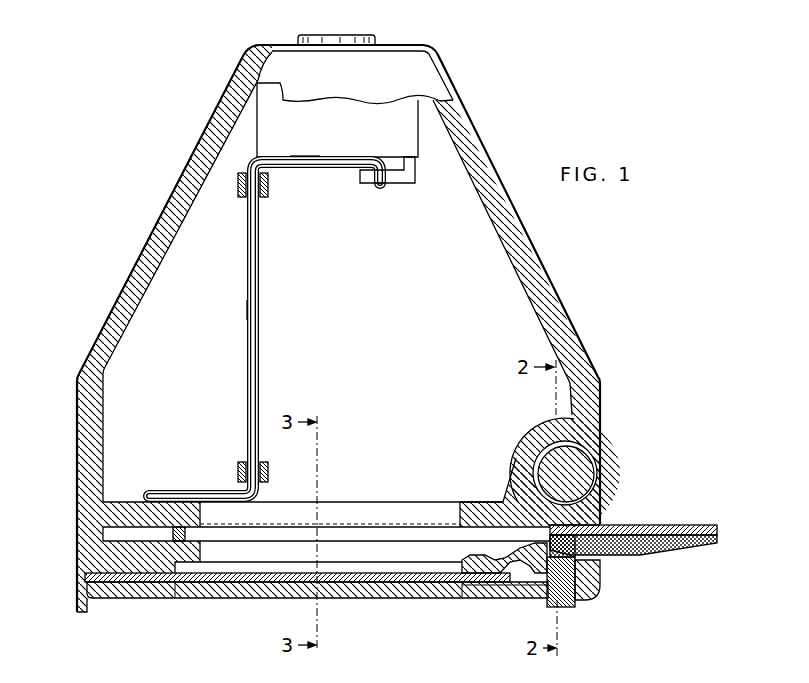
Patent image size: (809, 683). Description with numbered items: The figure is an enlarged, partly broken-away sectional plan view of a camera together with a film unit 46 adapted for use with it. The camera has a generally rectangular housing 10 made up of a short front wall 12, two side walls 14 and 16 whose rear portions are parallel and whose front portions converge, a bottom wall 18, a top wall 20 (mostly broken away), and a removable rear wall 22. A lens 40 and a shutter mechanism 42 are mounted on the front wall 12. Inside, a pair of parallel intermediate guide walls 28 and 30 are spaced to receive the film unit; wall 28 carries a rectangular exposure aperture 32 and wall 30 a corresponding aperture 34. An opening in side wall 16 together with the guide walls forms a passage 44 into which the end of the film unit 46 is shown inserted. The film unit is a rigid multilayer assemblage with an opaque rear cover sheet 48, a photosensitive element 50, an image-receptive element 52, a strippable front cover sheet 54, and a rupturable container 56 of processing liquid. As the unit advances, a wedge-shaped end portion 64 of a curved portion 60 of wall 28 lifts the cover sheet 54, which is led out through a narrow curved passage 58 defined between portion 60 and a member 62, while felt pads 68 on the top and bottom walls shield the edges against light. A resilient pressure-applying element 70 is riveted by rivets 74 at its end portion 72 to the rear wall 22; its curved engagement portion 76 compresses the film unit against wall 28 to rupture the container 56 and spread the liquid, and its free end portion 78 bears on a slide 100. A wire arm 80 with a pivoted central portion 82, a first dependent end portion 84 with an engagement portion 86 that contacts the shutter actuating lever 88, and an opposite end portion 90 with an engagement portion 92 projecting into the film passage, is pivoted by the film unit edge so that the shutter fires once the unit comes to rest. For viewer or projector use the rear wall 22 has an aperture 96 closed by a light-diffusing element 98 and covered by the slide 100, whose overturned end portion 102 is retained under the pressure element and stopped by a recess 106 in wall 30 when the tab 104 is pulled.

The housing 10 is at (553, 256).
The front wall 12 is at (404, 44).
The side wall 14 is at (157, 228).
The side wall 16 is at (521, 224).
The bottom wall 18 is at (353, 295).
The top wall 20 is at (430, 70).
The rear wall 22 is at (110, 590).
The guide wall 28 is at (122, 502).
The guide wall 30 is at (103, 536).
The exposure aperture 32 is at (356, 510).
The aperture 34 is at (293, 556).
The lens 40 is at (313, 26).
The shutter mechanism 42 is at (342, 117).
The passage 44 is at (605, 520).
The film unit 46 is at (642, 508).
The rear cover sheet 48 is at (710, 543).
The photosensitive element 50 is at (693, 548).
The image-receptive element 52 is at (690, 522).
The front cover sheet 54 is at (707, 522).
The rupturable container 56 is at (640, 552).
The curved passage 58 is at (520, 440).
The curved portion 60 is at (540, 428).
The member 62 is at (595, 457).
The wedge-shaped end portion 64 is at (577, 480).
The felt pads 68 is at (593, 582).
The pressure-applying element 70 is at (545, 596).
The end portion 72 is at (567, 606).
The rivets 74 is at (565, 600).
The engagement portion 76 is at (502, 498).
The free end portion 78 is at (463, 565).
The arm 80 is at (265, 270).
The central portion 82 is at (248, 310).
The first dependent end portion 84 is at (307, 164).
The engagement portion 86 is at (385, 182).
The actuating lever 88 is at (416, 176).
The end portion 90 is at (204, 479).
The engagement portion 92 is at (200, 534).
The aperture 96 is at (175, 592).
The light-diffusing element 98 is at (257, 593).
The slide 100 is at (331, 577).
The overturned end portion 102 is at (490, 598).
The tab 104 is at (90, 603).
The recess 106 is at (190, 566).